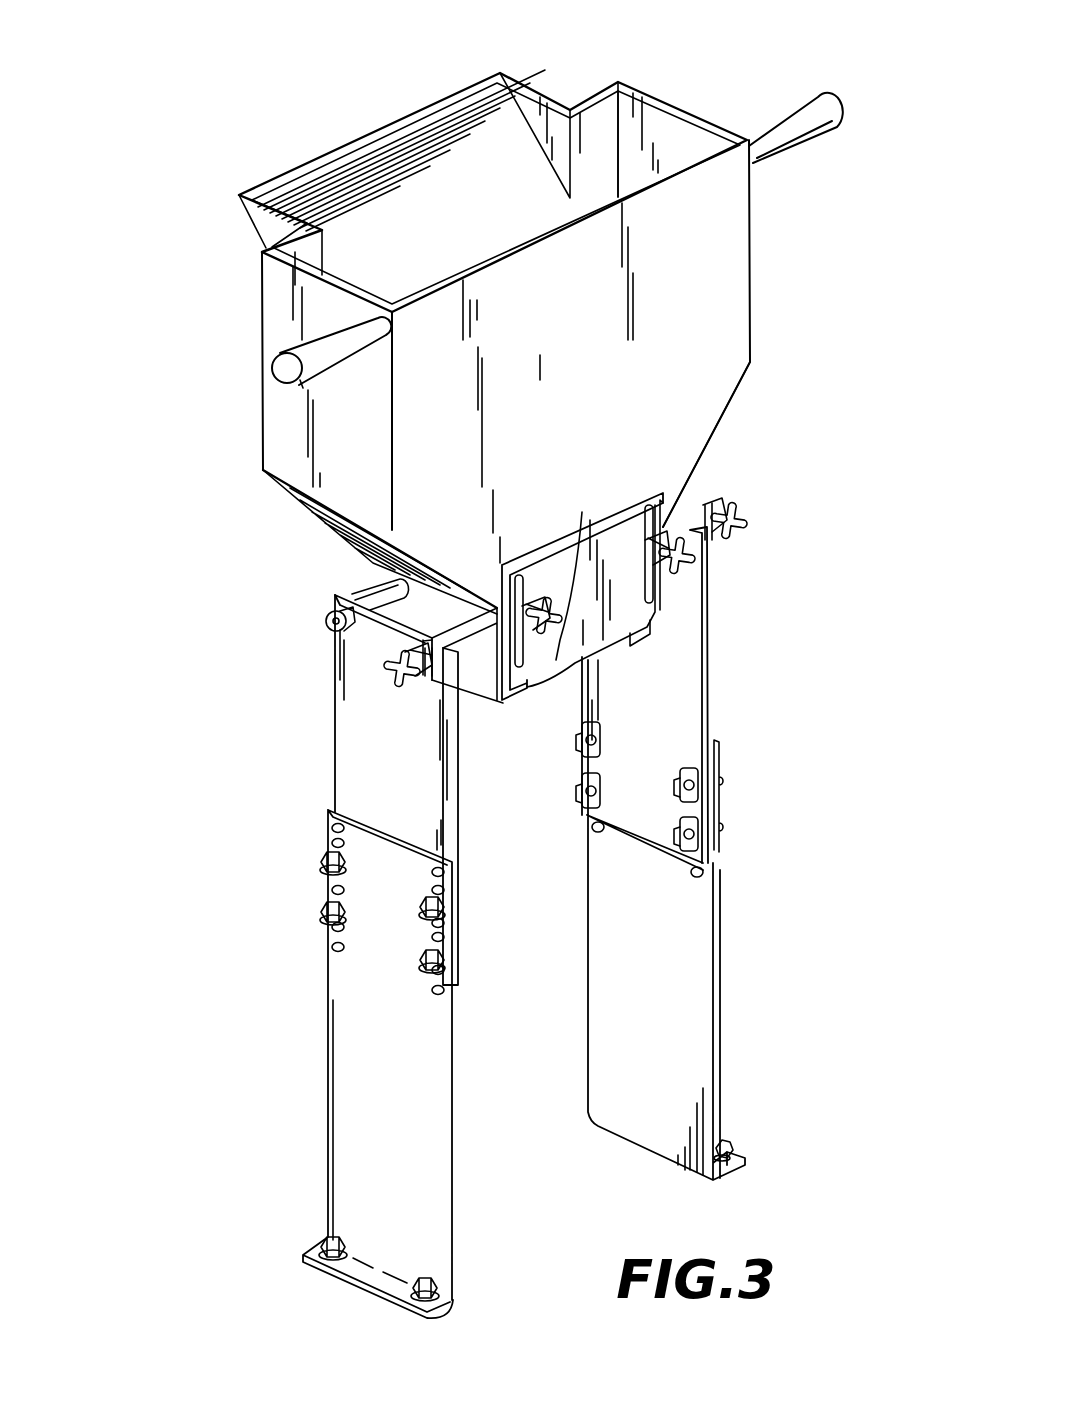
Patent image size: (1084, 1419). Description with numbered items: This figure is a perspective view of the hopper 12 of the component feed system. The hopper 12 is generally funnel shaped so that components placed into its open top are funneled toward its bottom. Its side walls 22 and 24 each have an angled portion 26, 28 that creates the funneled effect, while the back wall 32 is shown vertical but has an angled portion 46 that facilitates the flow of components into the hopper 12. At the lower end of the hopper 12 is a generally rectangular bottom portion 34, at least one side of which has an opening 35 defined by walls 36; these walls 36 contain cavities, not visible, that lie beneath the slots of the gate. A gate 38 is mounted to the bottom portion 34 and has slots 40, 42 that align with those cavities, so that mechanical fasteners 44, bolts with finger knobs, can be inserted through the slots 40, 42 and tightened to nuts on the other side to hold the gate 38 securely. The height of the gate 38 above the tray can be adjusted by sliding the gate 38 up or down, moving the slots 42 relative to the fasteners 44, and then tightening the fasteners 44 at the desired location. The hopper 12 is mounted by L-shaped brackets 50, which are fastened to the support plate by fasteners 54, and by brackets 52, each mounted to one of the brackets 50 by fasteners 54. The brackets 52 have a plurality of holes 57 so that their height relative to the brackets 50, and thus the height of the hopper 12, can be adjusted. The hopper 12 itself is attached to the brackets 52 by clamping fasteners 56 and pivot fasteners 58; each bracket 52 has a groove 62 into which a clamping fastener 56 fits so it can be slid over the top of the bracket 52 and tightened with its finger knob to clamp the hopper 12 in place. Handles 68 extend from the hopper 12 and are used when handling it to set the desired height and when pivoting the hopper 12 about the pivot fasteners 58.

The hopper 12 is at (580, 374).
The side wall 22 is at (207, 406).
The side wall 24 is at (790, 282).
The angled portion of side wall 26 is at (320, 500).
The angled portion of side wall 28 is at (735, 390).
The back wall 32 is at (595, 130).
The bottom portion 34 is at (550, 683).
The opening 35 is at (563, 687).
The walls 36 is at (640, 633).
The gate 38 is at (628, 598).
The slot 40 is at (497, 602).
The slot 42 is at (663, 494).
The mechanical fasteners 44 is at (640, 575).
The angled portion of back wall 46 is at (388, 178).
The brackets 50 is at (414, 1104).
The brackets 52 is at (412, 794).
The fasteners 54 is at (422, 905).
The clamping fasteners 56 is at (395, 683).
The holes 57 is at (333, 828).
The pivot fasteners 58 is at (328, 620).
The groove 62 is at (450, 615).
The handles 68 is at (793, 120).